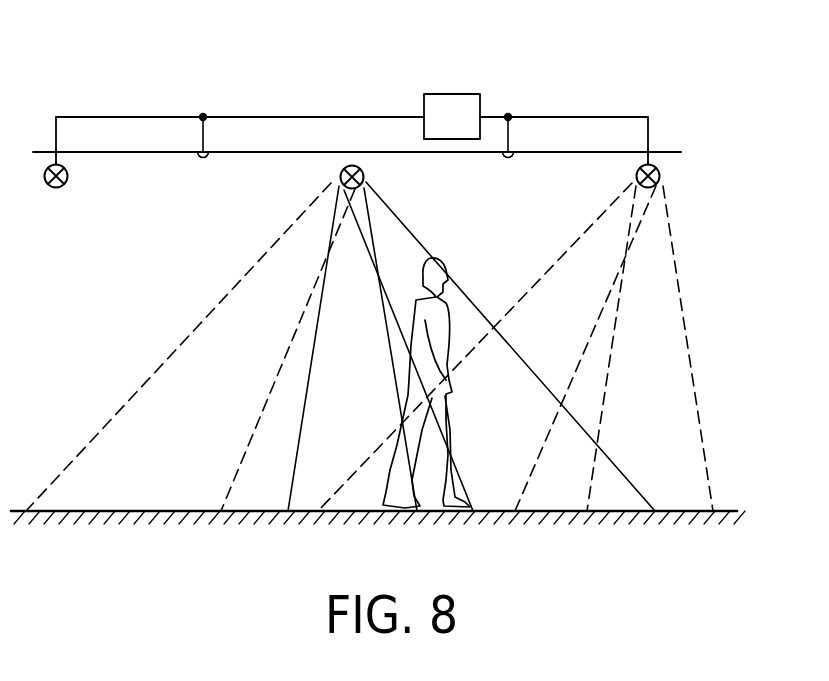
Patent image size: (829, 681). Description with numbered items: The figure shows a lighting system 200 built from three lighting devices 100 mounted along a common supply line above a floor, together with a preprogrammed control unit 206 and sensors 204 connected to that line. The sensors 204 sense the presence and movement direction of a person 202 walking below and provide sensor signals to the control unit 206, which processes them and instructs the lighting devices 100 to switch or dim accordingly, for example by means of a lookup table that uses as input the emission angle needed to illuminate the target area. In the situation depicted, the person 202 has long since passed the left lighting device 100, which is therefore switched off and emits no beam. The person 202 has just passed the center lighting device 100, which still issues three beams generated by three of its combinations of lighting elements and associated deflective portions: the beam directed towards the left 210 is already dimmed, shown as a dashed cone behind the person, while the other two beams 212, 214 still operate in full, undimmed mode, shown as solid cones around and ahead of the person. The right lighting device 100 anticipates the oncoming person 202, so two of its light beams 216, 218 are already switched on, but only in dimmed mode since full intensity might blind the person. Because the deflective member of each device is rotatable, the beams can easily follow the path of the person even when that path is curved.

The lighting device 100 is at (651, 165).
The lighting system 200 is at (689, 180).
The person 202 is at (436, 258).
The sensor 204 is at (502, 206).
The control unit 206 is at (453, 94).
The light beam towards the left 210 is at (250, 444).
The light beam 212 is at (400, 409).
The light beam 214 is at (538, 377).
The light beam 216 is at (579, 369).
The light beam 218 is at (697, 408).